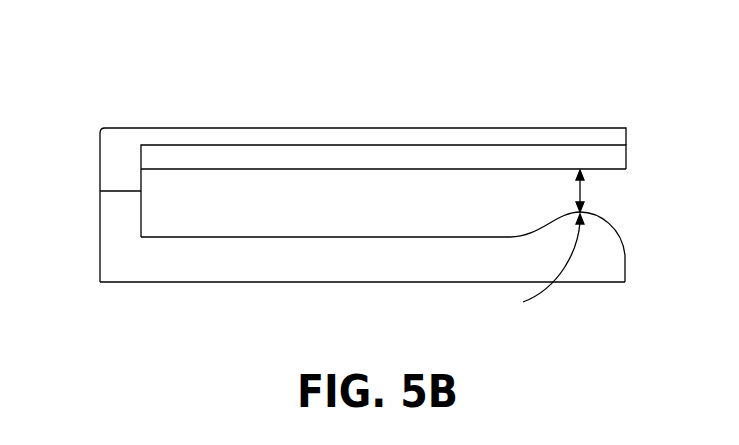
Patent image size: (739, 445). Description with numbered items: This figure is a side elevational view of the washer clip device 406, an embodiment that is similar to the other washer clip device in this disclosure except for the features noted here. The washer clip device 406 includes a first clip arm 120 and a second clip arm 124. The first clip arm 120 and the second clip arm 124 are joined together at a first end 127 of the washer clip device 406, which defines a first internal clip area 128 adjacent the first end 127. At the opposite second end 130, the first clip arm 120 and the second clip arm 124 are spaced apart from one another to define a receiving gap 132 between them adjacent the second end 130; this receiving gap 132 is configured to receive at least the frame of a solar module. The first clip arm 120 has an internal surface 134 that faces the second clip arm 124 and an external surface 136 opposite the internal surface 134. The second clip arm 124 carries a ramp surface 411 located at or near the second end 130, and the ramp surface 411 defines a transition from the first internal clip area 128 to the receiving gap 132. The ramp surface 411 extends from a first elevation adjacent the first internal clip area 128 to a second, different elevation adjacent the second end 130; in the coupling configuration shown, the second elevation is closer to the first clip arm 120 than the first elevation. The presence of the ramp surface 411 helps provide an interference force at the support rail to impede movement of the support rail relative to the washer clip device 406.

The washer clip device 406 is at (192, 86).
The external surface 136 is at (232, 128).
The first clip arm 120 is at (631, 145).
The internal surface 134 is at (273, 170).
The first end 127 is at (94, 230).
The first internal clip area 128 is at (198, 222).
The second clip arm 124 is at (634, 260).
The receiving gap 132 is at (578, 190).
The second end 130 is at (640, 200).
The ramp surface 411 is at (538, 263).